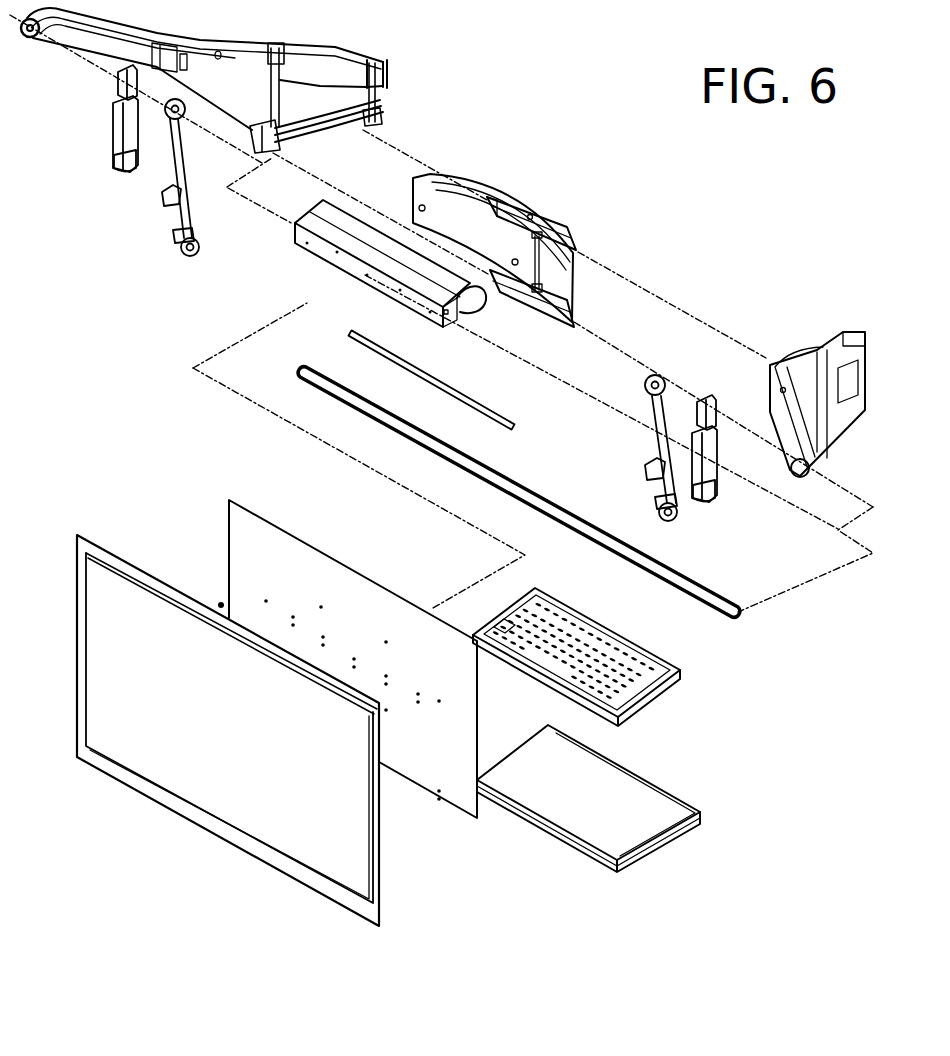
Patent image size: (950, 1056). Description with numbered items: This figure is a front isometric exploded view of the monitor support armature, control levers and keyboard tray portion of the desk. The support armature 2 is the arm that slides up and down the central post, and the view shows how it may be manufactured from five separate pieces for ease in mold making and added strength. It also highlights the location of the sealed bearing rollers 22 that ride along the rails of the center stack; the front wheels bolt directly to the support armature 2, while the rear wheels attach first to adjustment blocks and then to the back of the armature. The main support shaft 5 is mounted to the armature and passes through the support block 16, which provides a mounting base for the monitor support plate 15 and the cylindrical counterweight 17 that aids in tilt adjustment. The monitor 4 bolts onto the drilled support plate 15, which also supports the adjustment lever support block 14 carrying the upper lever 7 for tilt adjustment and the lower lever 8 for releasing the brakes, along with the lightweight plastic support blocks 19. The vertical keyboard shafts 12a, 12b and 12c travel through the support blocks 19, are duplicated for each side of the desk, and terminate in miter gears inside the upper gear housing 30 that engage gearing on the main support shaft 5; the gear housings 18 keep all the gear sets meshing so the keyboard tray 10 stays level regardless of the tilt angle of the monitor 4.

The support armature 2 is at (312, 67).
The sealed bearing rollers 22 is at (273, 110).
The adjustment lever support block 14 is at (114, 110).
The upper lever 7 is at (116, 123).
The lower lever 8 is at (113, 157).
The upper gear housing 30 is at (177, 113).
The vertical keyboard shaft 12a is at (178, 221).
The vertical keyboard connection shaft 12b is at (350, 332).
The vertical keyboard shaft 12c is at (658, 418).
The lightweight plastic support blocks 19 is at (163, 193).
The gear housings 18 is at (180, 250).
The support block 16 is at (323, 252).
The cylindrical counterweight 17 is at (466, 300).
The main support shaft 5 is at (705, 590).
The monitor 4 is at (120, 569).
The monitor support plate 15 is at (325, 564).
The keyboard tray 10 is at (650, 793).